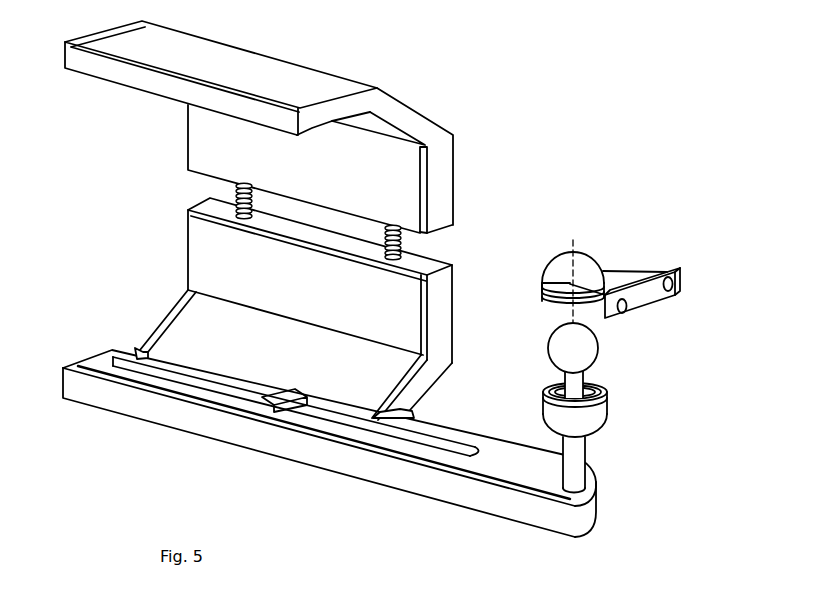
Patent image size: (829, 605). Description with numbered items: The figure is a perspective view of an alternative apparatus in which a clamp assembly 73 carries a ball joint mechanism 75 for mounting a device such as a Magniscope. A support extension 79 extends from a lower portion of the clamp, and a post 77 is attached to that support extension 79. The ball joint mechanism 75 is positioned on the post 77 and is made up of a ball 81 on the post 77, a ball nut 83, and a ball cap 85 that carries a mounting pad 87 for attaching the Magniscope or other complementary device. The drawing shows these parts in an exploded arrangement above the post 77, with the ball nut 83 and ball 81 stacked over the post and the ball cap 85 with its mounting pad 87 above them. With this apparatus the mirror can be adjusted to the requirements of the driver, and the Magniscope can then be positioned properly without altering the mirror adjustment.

The clamp assembly 73 is at (394, 33).
The ball joint mechanism 75 is at (602, 362).
The post 77 is at (589, 466).
The support extension 79 is at (420, 478).
The ball 81 is at (549, 352).
The ball nut 83 is at (609, 421).
The ball cap 85 is at (541, 274).
The mounting pad 87 is at (666, 273).